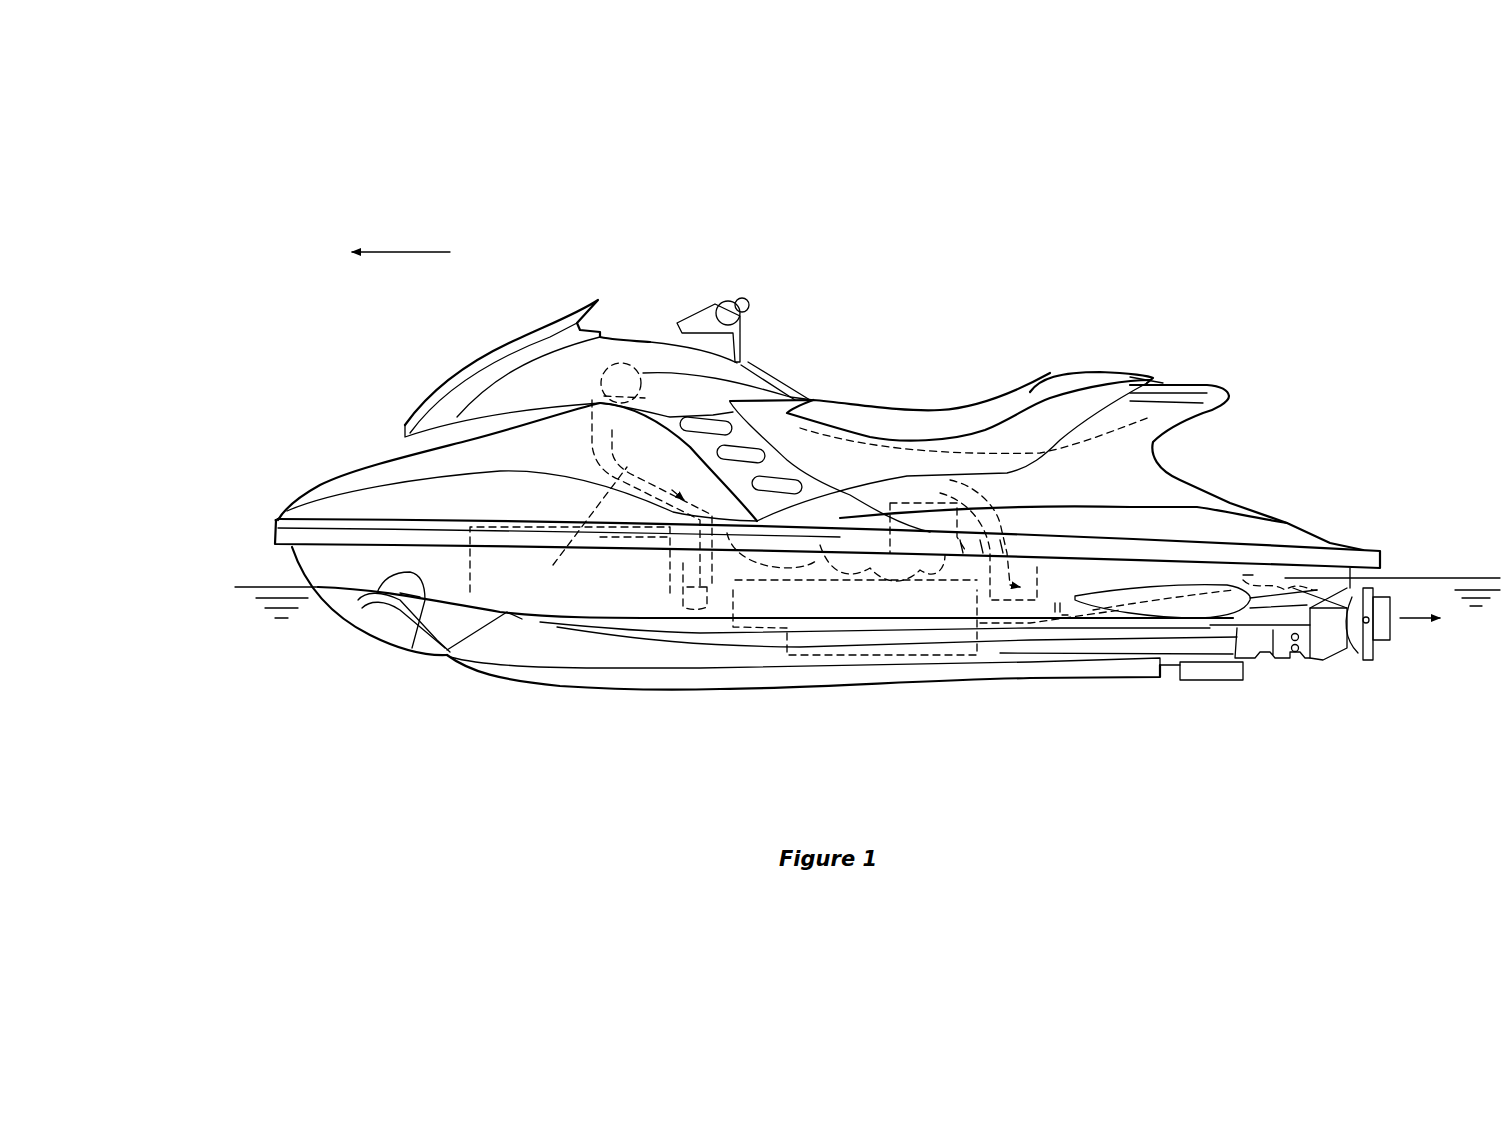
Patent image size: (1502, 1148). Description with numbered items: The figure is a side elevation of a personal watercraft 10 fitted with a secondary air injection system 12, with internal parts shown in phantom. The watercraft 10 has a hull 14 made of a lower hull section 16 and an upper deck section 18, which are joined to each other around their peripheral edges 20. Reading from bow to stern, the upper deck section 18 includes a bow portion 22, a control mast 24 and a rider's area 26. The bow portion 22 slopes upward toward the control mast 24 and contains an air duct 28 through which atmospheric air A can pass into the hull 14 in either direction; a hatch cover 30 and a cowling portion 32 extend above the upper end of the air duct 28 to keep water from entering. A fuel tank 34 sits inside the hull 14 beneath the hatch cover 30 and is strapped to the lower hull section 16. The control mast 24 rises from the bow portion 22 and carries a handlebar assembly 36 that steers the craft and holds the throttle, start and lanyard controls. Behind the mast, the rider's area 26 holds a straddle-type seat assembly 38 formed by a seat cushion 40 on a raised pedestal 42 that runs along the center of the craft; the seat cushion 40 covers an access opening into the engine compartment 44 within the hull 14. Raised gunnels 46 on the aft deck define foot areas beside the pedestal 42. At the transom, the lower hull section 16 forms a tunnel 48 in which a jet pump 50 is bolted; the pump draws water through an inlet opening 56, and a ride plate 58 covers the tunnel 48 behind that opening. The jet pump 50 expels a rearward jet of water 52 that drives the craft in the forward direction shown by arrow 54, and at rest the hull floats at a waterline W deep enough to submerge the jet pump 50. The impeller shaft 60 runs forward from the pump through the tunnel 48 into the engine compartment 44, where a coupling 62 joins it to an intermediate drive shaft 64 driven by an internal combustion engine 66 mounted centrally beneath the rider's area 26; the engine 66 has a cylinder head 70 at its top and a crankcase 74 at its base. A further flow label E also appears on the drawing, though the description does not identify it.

The personal watercraft 10 is at (1243, 343).
The secondary air injection system 12 is at (928, 700).
The hull 14 is at (257, 483).
The lower hull section 16 is at (305, 562).
The upper deck section 18 is at (334, 478).
The peripheral edges 20 is at (275, 528).
The bow portion 22 is at (440, 352).
The control mast 24 is at (722, 292).
The rider's area 26 is at (998, 290).
The air duct 28 is at (620, 360).
The hatch cover 30 is at (527, 333).
The cowling portion 32 is at (550, 408).
The fuel tank 34 is at (477, 588).
The handlebar assembly 36 is at (752, 305).
The seat assembly 38 is at (1068, 368).
The seat cushion 40 is at (1020, 398).
The raised pedestal 42 is at (1180, 480).
The engine compartment 44 is at (670, 580).
The raised gunnels 46 is at (1290, 523).
The tunnel 48 is at (1180, 570).
The jet pump 50 is at (1328, 640).
The jet of water 52 is at (1400, 618).
The arrow 54 is at (403, 252).
The inlet opening 56 is at (1093, 668).
The ride plate 58 is at (1210, 680).
The impeller shaft 60 is at (1073, 580).
The coupling 62 is at (1065, 607).
The intermediate drive shaft 64 is at (1018, 630).
The internal combustion engine 66 is at (855, 468).
The cylinder head 70 is at (910, 503).
The crankcase 74 is at (857, 657).
The atmospheric air A is at (578, 526).
The exhaust flow E is at (983, 615).
The waterline W is at (415, 605).